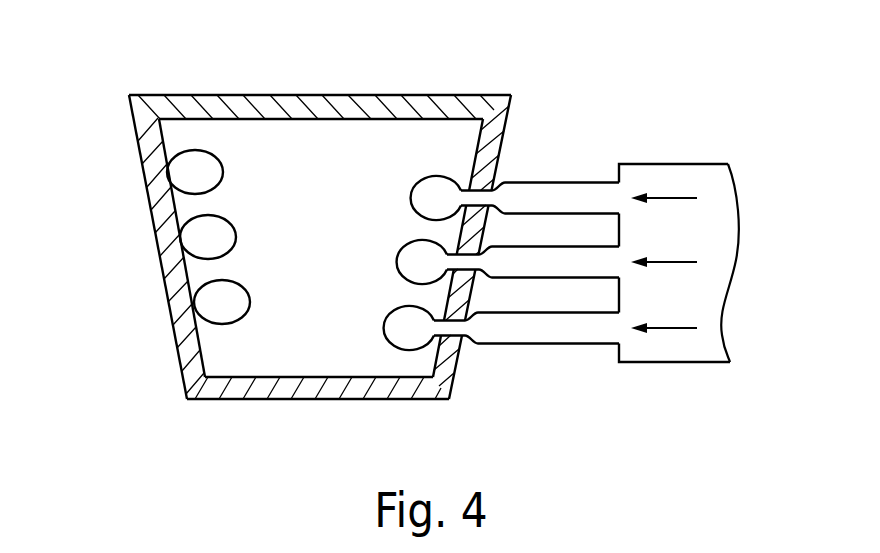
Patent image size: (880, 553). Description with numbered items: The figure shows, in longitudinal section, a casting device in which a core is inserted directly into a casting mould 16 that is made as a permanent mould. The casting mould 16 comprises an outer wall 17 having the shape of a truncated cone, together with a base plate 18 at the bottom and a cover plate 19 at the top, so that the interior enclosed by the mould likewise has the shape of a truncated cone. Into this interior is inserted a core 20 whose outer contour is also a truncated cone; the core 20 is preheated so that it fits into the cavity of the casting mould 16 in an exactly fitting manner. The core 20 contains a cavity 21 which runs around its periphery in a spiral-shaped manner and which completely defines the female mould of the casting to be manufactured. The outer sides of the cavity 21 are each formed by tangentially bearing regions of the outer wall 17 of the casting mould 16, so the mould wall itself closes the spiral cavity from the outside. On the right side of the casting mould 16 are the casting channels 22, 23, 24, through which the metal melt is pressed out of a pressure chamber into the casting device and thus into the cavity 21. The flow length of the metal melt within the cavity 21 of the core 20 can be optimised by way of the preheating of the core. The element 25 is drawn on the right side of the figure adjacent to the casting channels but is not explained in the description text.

The mold 16 is at (130, 237).
The side wall 17 is at (159, 262).
The bottom wall 18 is at (272, 400).
The top wall 19 is at (302, 97).
The powder 20 is at (457, 145).
The cavities 21 is at (193, 170).
The gas distributor 22 is at (590, 178).
The channel 23 is at (528, 265).
The channel 24 is at (520, 333).
The gas supply 25 is at (702, 183).